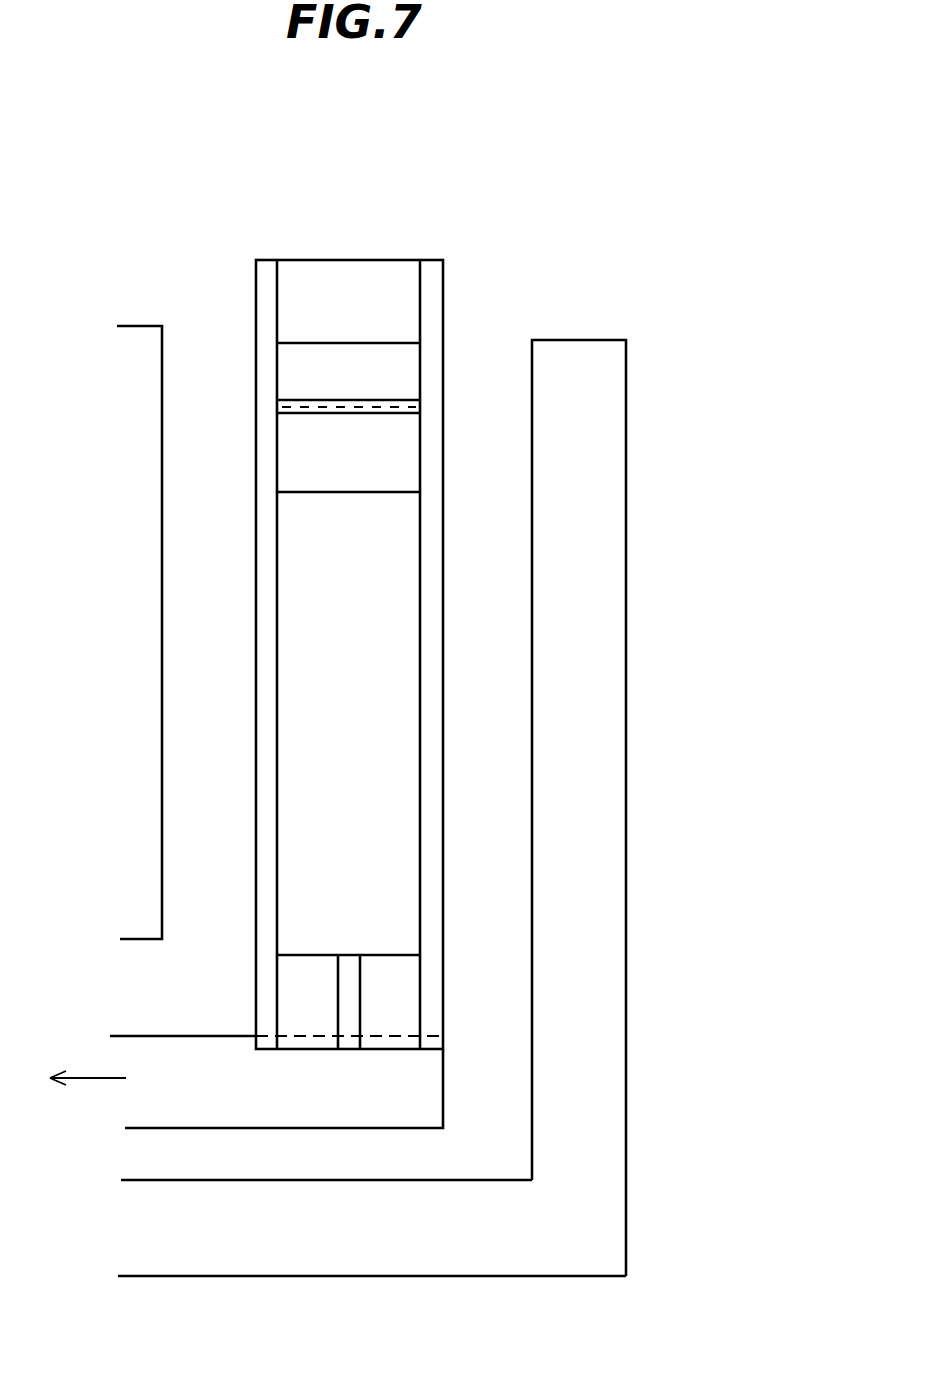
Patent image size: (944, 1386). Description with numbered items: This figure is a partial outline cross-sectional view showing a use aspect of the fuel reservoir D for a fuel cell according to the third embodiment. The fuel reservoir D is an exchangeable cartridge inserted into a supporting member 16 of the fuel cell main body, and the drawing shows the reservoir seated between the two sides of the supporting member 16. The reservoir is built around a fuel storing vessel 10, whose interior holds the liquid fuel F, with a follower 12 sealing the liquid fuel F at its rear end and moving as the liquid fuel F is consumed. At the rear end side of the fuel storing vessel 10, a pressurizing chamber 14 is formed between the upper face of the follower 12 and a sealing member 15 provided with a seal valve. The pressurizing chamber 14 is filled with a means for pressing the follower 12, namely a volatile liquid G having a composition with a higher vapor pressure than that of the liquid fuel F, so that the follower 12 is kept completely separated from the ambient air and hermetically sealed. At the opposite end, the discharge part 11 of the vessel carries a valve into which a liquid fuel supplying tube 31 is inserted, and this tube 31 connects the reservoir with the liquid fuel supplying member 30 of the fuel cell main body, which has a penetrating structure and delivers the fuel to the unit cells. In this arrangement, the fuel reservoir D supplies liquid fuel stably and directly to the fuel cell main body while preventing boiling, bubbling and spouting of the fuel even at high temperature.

The fuel storing vessel 10 is at (255, 560).
The discharge part 11 is at (320, 965).
The follower 12 is at (290, 452).
The pressurizing chamber 14 is at (402, 362).
The sealing member 15 is at (310, 280).
The supporting member 16 is at (140, 345).
The liquid fuel supplying member 30 is at (255, 1118).
The liquid fuel supplying tube 31 is at (337, 995).
The fuel reservoir D is at (475, 261).
The liquid fuel F is at (305, 683).
The volatile liquid G is at (365, 403).